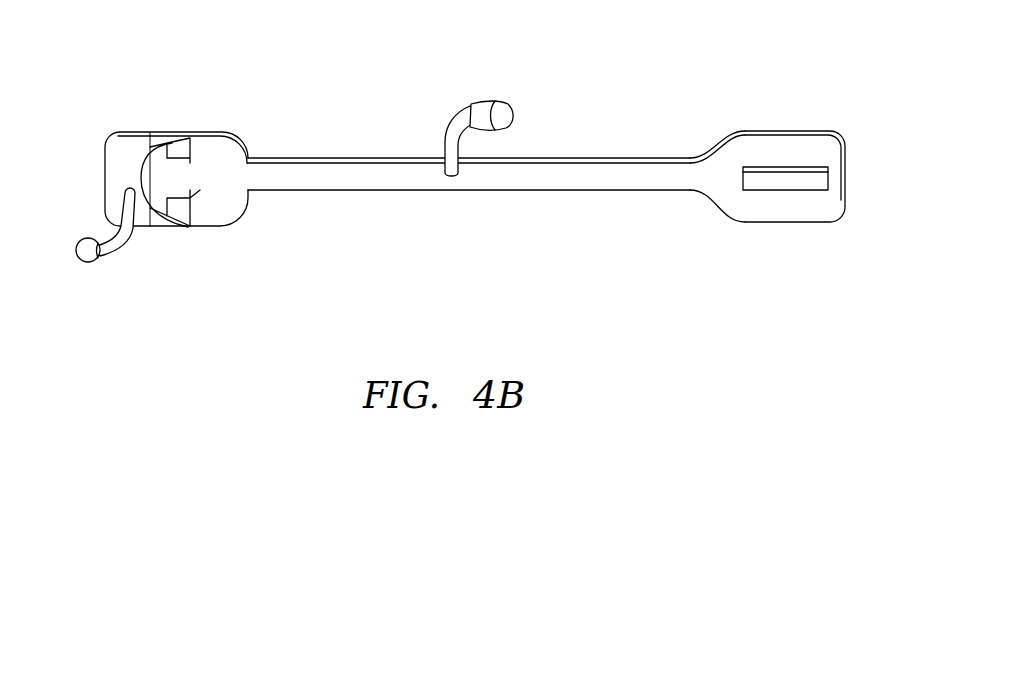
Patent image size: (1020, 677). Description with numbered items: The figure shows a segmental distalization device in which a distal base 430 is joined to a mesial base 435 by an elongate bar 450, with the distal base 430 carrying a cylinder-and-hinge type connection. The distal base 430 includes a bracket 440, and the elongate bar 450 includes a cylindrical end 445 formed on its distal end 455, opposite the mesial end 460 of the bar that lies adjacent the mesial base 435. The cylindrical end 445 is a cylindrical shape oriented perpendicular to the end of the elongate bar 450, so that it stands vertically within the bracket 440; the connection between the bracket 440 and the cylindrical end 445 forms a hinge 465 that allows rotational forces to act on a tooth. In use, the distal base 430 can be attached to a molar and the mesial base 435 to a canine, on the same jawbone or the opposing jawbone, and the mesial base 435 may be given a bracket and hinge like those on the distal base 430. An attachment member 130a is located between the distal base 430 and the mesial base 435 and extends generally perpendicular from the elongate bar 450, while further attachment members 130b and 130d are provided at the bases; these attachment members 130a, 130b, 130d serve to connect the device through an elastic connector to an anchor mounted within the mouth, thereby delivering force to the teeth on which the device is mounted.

The attachment member 130a is at (505, 103).
The attachment member 130b is at (98, 260).
The attachment member 130d is at (801, 174).
The distal base 430 is at (224, 214).
The mesial base 435 is at (769, 205).
The bracket 440 is at (143, 148).
The cylindrical end 445 is at (162, 209).
The elongate bar 450 is at (348, 169).
The distal end 455 is at (272, 180).
The mesial end 460 is at (694, 180).
The hinge 465 is at (139, 174).